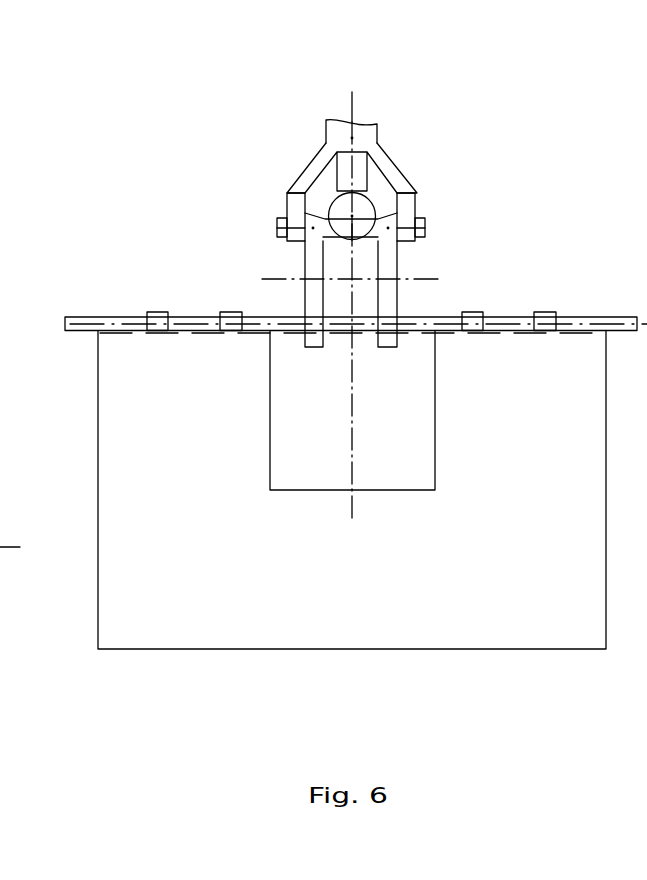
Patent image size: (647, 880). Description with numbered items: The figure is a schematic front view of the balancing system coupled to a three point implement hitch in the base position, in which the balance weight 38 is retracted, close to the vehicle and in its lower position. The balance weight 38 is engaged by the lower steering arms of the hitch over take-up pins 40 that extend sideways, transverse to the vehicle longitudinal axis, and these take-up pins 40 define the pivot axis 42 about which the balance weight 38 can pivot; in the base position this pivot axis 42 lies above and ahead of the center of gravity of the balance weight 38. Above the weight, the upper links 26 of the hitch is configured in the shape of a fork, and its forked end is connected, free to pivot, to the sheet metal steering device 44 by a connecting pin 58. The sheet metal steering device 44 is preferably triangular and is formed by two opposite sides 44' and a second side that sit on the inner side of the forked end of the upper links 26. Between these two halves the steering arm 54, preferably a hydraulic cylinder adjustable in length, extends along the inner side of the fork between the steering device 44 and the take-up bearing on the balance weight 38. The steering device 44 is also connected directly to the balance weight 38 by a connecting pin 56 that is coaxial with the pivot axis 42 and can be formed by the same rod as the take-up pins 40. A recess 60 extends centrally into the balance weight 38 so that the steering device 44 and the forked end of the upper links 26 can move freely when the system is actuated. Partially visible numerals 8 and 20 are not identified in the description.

The upper links 26 is at (365, 135).
The steering arm 54 is at (362, 207).
The connecting pin 58 is at (277, 227).
The sheet metal steering device 44 is at (329, 220).
The sheet metal steering device side 44' is at (266, 245).
The take-up pins 40 is at (84, 317).
The pivot axis 42 is at (65, 324).
The connecting pin 56 is at (342, 326).
The recess 60 is at (379, 457).
The balance weight 38 is at (230, 592).
The apparatus 8 is at (4, 132).
The frame 20 is at (3, 643).